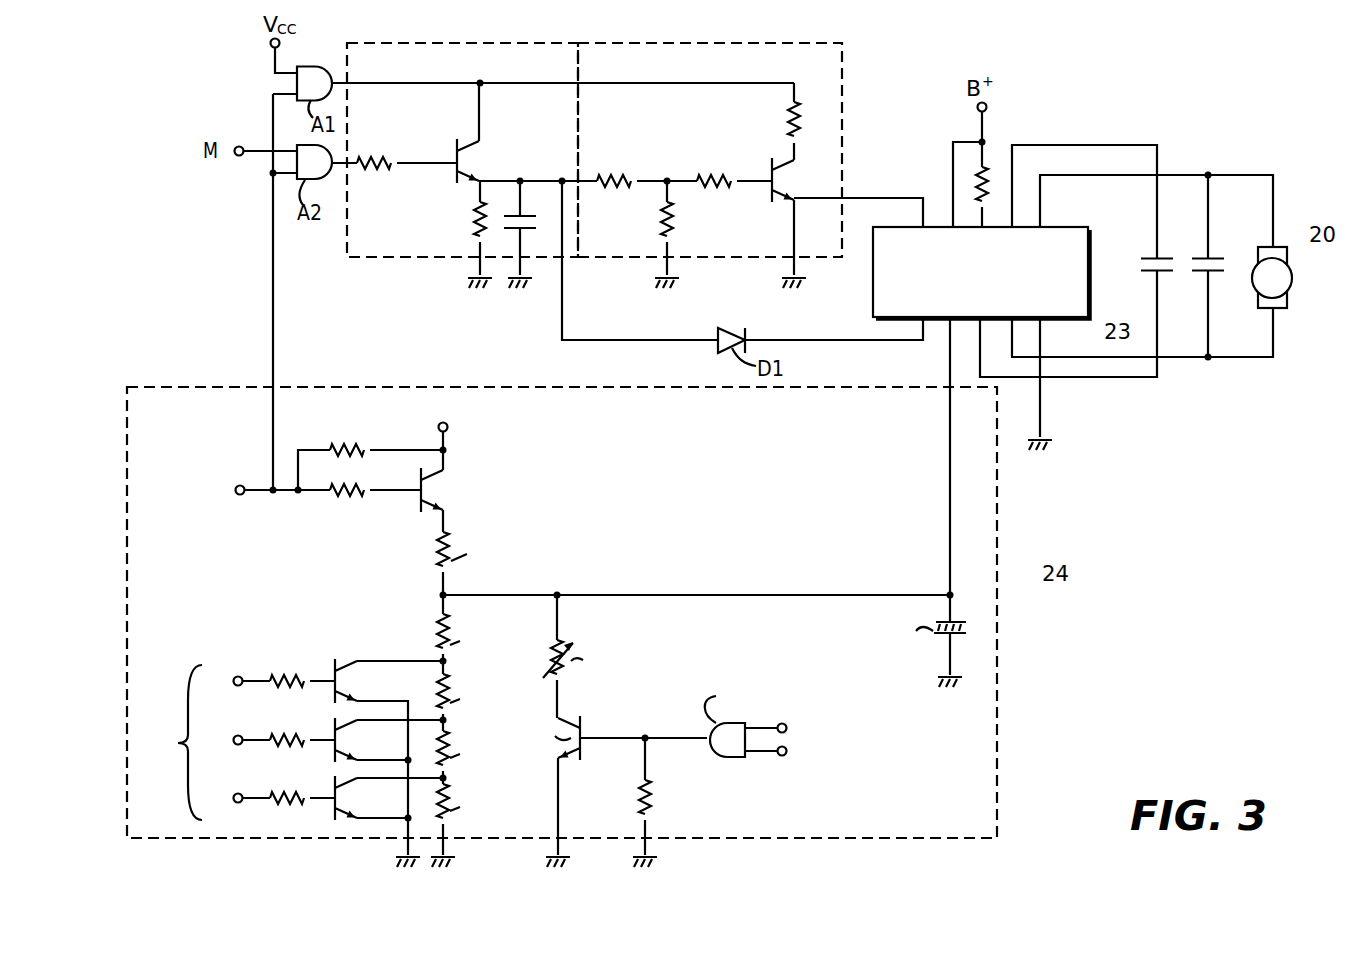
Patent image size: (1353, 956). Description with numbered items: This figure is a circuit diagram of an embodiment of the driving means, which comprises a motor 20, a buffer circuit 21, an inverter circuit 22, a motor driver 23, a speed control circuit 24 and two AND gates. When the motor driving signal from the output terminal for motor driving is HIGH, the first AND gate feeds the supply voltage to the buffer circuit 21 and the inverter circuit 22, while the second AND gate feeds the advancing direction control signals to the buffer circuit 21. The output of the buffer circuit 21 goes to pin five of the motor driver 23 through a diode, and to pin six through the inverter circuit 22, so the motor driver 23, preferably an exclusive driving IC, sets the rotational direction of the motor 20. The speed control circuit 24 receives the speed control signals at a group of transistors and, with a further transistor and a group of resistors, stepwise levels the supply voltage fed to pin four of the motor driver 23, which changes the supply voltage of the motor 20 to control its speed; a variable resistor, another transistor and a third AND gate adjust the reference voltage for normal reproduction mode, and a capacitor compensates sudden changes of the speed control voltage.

The motor 20 is at (1316, 246).
The buffer circuit 21 is at (425, 250).
The inverter circuit 22 is at (702, 246).
The motor driver 23 is at (1101, 331).
The speed control circuit 24 is at (1040, 573).